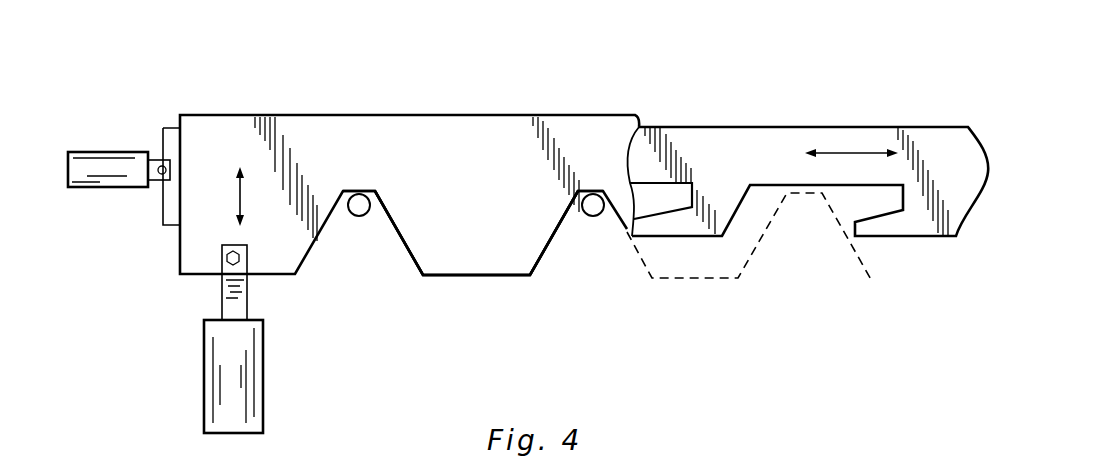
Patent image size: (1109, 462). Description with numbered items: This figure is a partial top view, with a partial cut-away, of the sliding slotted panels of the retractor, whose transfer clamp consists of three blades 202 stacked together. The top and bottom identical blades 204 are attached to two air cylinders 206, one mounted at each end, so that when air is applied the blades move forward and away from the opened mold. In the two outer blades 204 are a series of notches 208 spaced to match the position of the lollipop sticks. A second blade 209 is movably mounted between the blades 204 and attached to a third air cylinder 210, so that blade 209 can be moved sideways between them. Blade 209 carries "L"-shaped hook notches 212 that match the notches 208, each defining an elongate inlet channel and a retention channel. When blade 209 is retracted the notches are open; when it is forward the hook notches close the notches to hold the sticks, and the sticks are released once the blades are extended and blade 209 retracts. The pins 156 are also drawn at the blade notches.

The blades 202 is at (458, 114).
The top and bottom identical blades 204 is at (497, 188).
The air cylinders 206 is at (260, 370).
The notches 208 is at (420, 270).
The second blade 209 is at (732, 126).
The third air cylinder 210 is at (127, 183).
The "L"-shaped hook notches 212 is at (853, 227).
The pins 156 is at (359, 194).